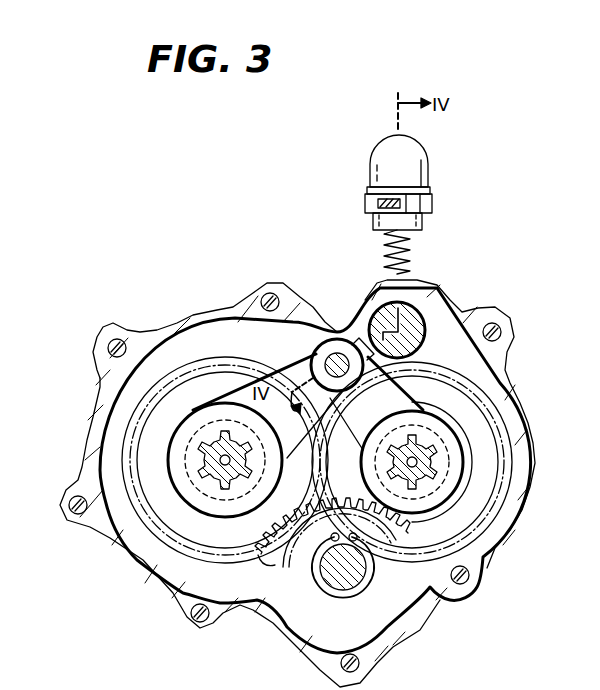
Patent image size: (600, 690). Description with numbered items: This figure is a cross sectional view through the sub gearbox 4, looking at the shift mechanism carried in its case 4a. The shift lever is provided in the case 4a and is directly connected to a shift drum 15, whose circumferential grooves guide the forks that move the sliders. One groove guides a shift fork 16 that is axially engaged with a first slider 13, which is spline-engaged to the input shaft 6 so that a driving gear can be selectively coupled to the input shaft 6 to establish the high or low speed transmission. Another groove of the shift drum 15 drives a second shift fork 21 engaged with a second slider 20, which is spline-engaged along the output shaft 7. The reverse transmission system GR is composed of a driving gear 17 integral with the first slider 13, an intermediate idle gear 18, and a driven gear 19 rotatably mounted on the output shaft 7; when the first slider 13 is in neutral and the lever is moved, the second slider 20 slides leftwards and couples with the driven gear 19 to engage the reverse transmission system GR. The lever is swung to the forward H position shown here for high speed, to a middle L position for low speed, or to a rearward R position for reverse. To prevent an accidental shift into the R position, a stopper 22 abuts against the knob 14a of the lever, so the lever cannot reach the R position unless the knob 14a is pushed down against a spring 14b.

The sub gearbox 4 is at (192, 312).
The case 4a is at (100, 378).
The input shaft 6 is at (437, 450).
The output shaft 7 is at (200, 460).
The first slider 13 is at (457, 473).
The knob 14a is at (428, 165).
The spring 14b is at (412, 260).
The shift drum 15 is at (372, 300).
The shift fork 16 is at (418, 405).
The driving gear 17 is at (456, 600).
The intermediate idle gear 18 is at (385, 550).
The driven gear 19 is at (257, 532).
The second slider 20 is at (175, 490).
The second shift fork 21 is at (287, 372).
The stopper 22 is at (368, 204).
The reverse transmission system GR is at (270, 574).
The H position H is at (412, 198).
The L position L is at (407, 100).
The R position R is at (298, 167).